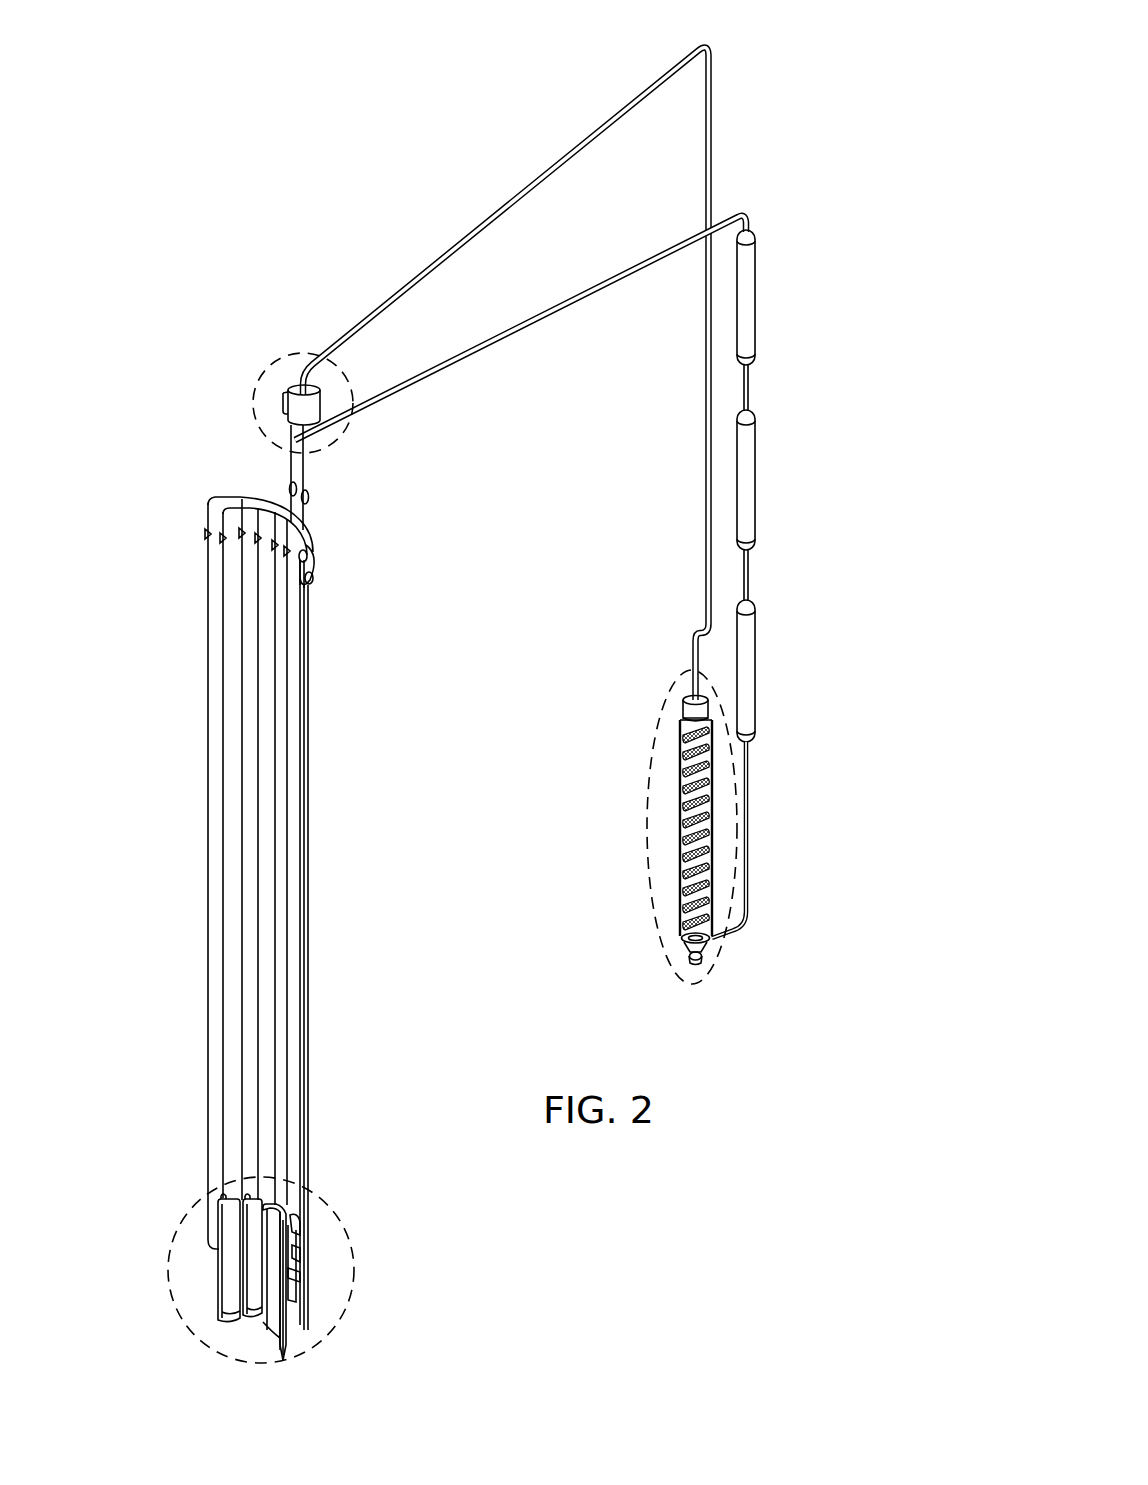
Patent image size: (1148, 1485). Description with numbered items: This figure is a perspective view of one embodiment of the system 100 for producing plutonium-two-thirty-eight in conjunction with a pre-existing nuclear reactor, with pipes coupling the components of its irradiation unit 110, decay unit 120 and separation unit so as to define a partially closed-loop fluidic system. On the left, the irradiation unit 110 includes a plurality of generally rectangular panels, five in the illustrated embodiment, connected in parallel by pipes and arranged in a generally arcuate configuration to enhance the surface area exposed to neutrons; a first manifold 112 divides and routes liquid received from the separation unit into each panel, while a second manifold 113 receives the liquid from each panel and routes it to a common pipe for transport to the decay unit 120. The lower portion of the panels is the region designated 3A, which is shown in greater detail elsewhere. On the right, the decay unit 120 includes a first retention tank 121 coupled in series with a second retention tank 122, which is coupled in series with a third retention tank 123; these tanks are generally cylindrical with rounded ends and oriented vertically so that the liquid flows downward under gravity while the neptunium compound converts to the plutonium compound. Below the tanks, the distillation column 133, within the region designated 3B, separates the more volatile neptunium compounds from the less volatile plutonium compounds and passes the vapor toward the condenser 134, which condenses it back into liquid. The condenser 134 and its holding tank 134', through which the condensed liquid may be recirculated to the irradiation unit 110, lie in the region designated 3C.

The system 100 is at (322, 240).
The irradiation unit 110 is at (210, 473).
The first manifold 112 is at (310, 522).
The second manifold 113 is at (318, 540).
The decay unit 120 is at (803, 201).
The first retention tank 121 is at (758, 258).
The second retention tank 122 is at (752, 472).
The third retention tank 123 is at (752, 690).
The distillation column 133 is at (678, 805).
The condenser 134 is at (520, 373).
The holding tank 134' is at (243, 455).
The portion of irradiation unit designated 3A is at (353, 1249).
The portion designated 3B is at (714, 962).
The portion of separation unit designated 3C is at (347, 428).